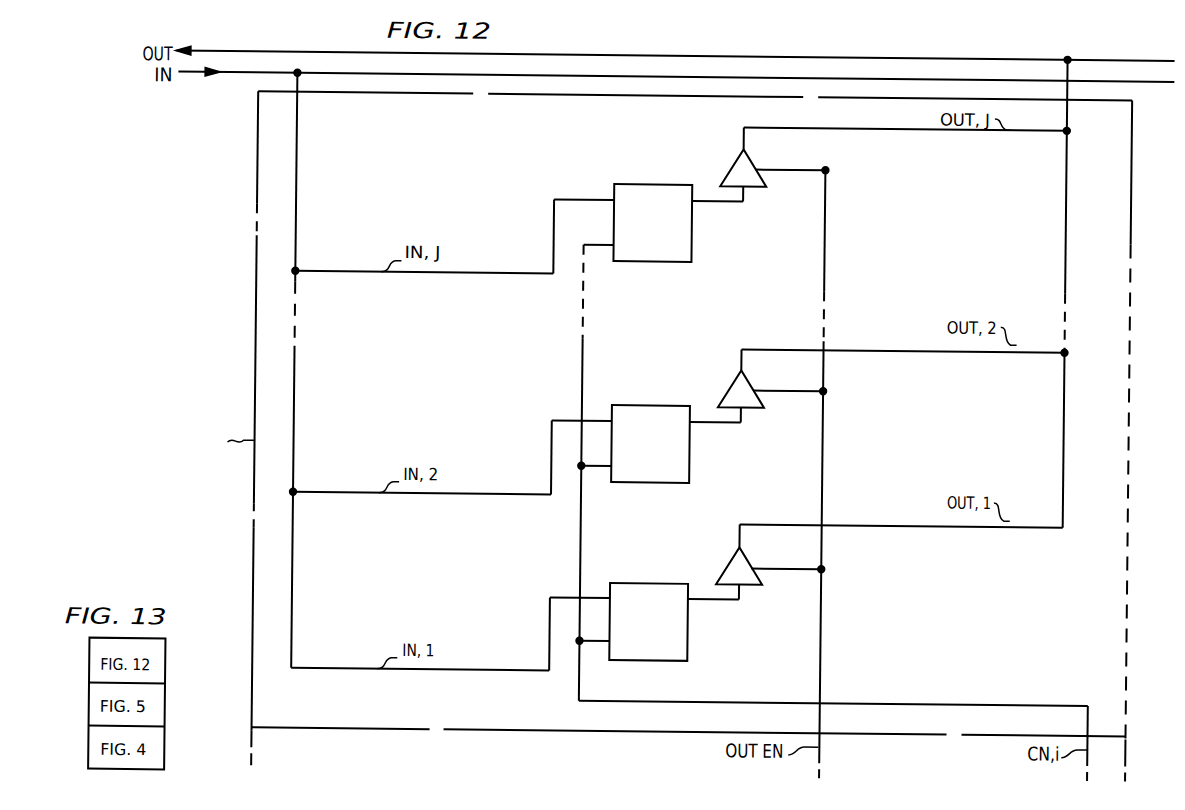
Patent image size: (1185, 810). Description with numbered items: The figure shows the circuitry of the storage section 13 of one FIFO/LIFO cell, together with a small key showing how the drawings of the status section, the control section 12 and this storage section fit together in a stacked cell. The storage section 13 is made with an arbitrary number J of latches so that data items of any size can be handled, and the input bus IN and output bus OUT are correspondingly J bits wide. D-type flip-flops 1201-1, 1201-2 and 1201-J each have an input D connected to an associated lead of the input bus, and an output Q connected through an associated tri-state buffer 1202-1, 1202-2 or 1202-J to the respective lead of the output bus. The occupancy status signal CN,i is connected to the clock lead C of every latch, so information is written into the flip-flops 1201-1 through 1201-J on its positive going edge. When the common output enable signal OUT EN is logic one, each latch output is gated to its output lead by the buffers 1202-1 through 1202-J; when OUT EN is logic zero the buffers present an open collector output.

The D-type flip-flop 1201-J is at (686, 185).
The D-type flip-flop 1201-2 is at (680, 406).
The D-type flip-flop 1201-1 is at (676, 584).
The tri-state buffer 1202-J is at (752, 163).
The tri-state buffer 1202-2 is at (750, 384).
The tri-state buffer 1202-1 is at (752, 560).
The control section 12 is at (1129, 757).
The storage section 13 is at (1129, 458).